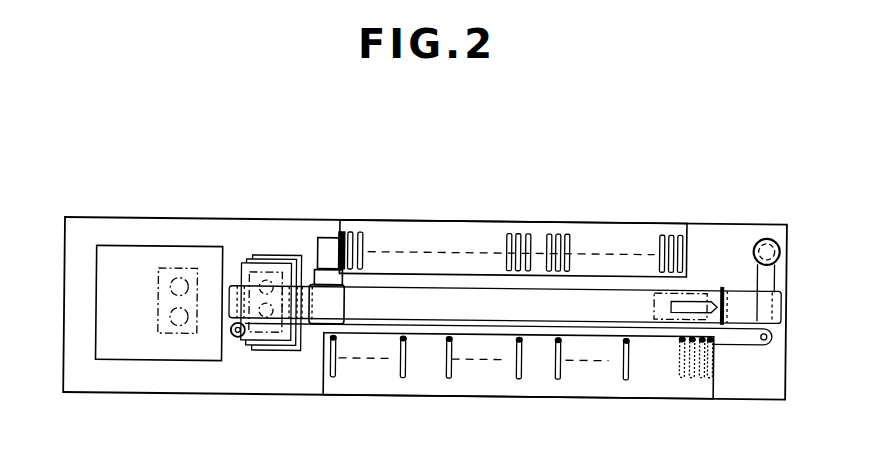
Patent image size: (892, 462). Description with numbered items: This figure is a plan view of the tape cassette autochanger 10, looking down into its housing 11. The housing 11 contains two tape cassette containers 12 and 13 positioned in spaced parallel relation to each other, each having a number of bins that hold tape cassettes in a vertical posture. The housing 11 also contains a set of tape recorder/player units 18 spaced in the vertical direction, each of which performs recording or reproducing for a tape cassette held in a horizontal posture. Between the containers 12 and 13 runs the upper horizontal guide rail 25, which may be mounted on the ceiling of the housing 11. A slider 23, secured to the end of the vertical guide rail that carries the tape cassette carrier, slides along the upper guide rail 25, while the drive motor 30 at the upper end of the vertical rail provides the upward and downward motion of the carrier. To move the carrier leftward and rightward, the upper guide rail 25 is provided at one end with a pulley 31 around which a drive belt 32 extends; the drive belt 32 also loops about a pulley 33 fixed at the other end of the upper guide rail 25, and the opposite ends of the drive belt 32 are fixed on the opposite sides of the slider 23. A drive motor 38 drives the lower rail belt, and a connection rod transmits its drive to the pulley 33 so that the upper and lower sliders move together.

The tape cassette autochanger 10 is at (270, 214).
The housing 11 is at (147, 392).
The tape cassette container 12 is at (437, 231).
The tape cassette container 13 is at (422, 378).
The tape recorder/player unit 18 is at (105, 302).
The slider 23 is at (311, 281).
The upper horizontal guide rail 25 is at (593, 308).
The drive motor 30 is at (329, 235).
The pulley 31 is at (237, 336).
The drive belt 32 is at (648, 340).
The pulley 33 is at (774, 337).
The drive motor 38 is at (768, 231).